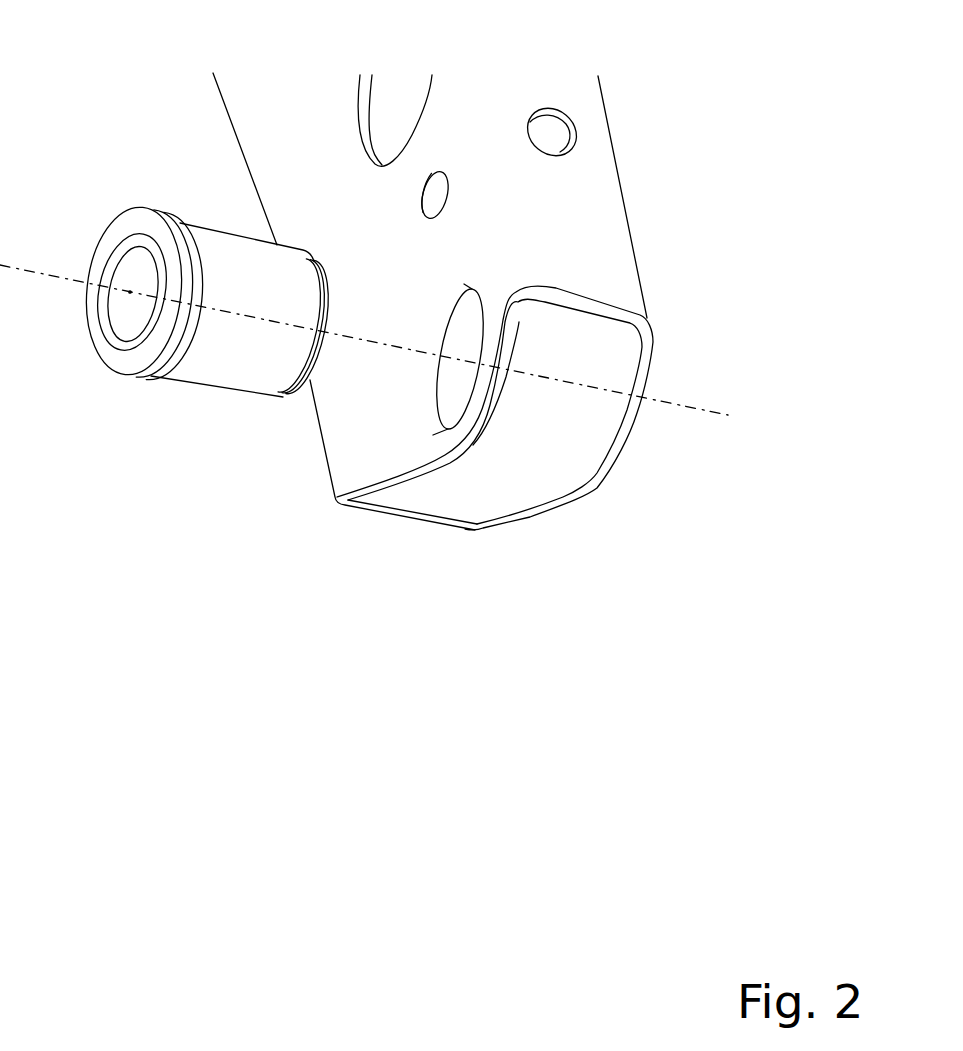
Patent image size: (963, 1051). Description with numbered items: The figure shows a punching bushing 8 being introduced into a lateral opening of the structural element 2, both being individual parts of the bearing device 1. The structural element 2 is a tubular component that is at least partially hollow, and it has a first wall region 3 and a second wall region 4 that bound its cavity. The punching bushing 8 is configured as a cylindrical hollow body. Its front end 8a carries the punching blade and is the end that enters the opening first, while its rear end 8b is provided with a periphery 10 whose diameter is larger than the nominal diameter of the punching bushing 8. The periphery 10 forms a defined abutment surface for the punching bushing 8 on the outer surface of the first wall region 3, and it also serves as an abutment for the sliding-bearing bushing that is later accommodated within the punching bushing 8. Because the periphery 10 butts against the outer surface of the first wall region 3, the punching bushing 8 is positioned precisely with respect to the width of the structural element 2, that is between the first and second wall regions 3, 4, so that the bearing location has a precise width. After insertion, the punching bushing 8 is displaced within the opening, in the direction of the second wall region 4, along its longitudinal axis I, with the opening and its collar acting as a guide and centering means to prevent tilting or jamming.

The bearing device 1 is at (705, 152).
The structural element 2 is at (592, 118).
The first wall region 3 is at (348, 438).
The second wall region 4 is at (597, 430).
The punching bushing 8 is at (291, 228).
The front end 8a is at (324, 271).
The rear end 8b is at (98, 252).
The periphery 10 is at (117, 363).
The longitudinal axis I is at (677, 405).